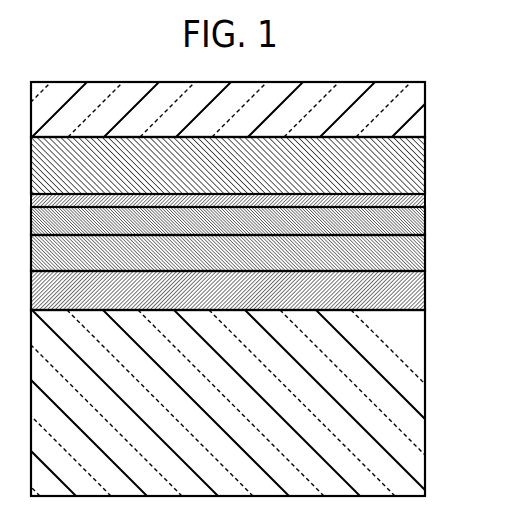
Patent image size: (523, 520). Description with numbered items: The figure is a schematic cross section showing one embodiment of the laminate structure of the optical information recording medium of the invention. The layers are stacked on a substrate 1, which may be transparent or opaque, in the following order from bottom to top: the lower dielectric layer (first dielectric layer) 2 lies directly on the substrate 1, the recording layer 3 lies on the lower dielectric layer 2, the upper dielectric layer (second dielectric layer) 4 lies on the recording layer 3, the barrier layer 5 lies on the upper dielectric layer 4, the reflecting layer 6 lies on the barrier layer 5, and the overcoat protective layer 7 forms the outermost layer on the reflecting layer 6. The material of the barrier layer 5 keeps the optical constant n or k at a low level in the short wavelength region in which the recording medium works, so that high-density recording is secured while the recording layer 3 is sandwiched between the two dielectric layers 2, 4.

The substrate 1 is at (418, 441).
The lower dielectric layer 2 is at (420, 295).
The recording layer 3 is at (420, 260).
The upper dielectric layer 4 is at (420, 225).
The barrier layer 5 is at (420, 199).
The reflecting layer 6 is at (420, 164).
The overcoat protective layer 7 is at (420, 119).